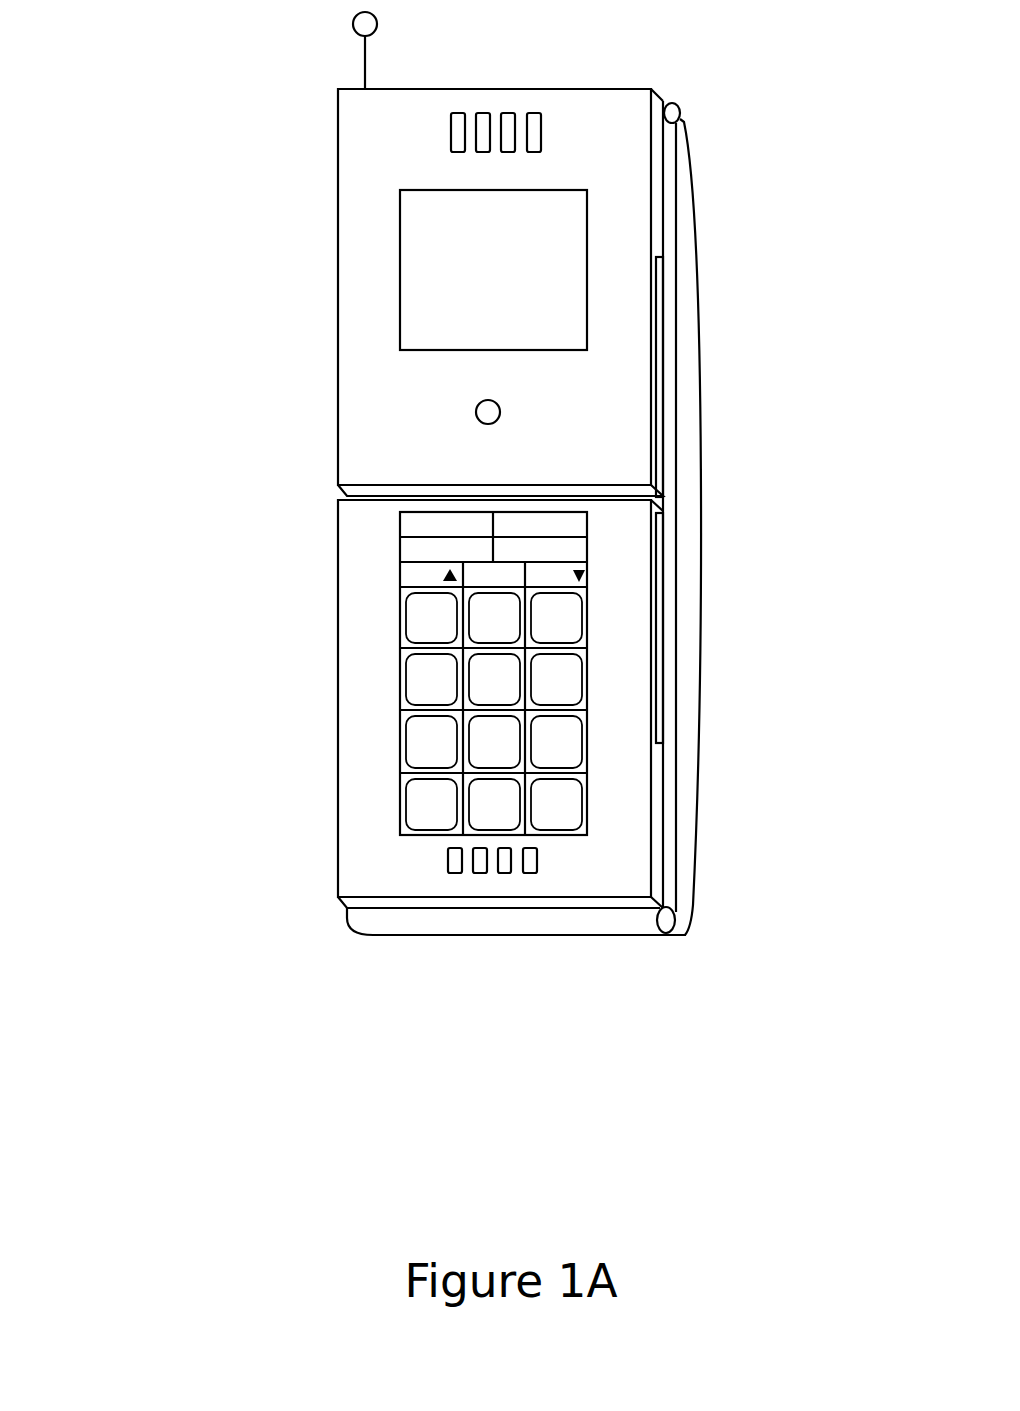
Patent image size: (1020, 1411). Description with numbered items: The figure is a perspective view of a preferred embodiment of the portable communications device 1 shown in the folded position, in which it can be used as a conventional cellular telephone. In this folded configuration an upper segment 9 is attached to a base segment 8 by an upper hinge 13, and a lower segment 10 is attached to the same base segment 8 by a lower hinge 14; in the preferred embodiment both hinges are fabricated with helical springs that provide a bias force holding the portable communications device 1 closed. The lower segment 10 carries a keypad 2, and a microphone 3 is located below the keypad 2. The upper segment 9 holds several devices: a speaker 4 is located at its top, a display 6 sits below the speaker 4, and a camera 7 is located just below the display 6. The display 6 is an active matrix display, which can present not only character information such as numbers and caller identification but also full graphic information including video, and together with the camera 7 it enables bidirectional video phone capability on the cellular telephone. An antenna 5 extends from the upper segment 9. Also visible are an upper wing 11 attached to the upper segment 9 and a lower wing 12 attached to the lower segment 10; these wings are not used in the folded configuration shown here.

The portable communications device 1 is at (178, 703).
The keypad 2 is at (580, 673).
The microphone 3 is at (503, 873).
The speaker 4 is at (483, 110).
The antenna 5 is at (353, 25).
The display 6 is at (557, 325).
The camera 7 is at (476, 412).
The base segment 8 is at (682, 290).
The upper segment 9 is at (358, 386).
The lower segment 10 is at (345, 773).
The upper wing 11 is at (657, 352).
The lower wing 12 is at (657, 563).
The upper hinge 13 is at (671, 103).
The lower hinge 14 is at (580, 922).